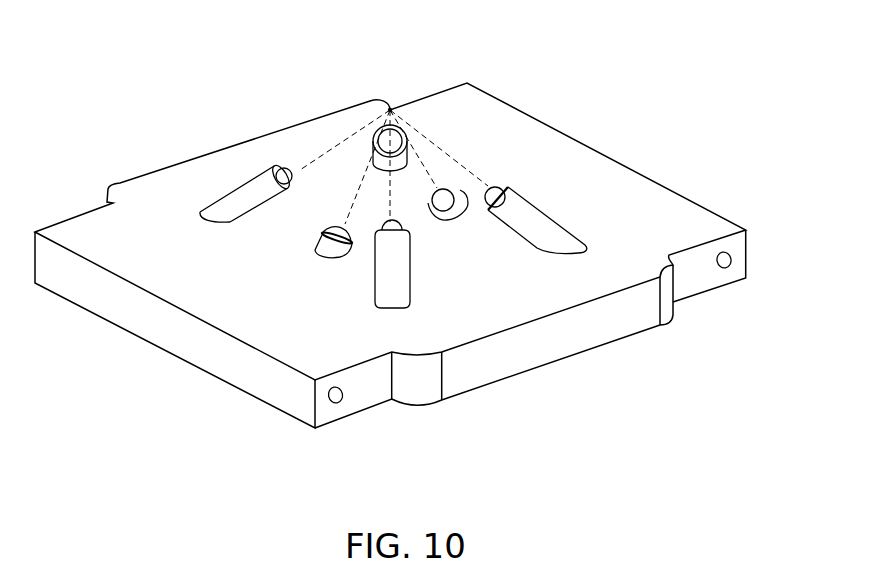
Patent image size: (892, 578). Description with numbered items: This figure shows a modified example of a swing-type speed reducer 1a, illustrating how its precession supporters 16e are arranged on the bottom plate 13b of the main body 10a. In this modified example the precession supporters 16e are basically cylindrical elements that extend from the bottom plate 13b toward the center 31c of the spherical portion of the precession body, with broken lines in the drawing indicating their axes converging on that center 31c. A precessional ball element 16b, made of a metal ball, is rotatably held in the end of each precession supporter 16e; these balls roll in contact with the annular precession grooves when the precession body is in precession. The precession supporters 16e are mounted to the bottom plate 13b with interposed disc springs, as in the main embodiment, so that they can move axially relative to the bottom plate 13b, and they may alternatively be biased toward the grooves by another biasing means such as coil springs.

The swing-type speed reducer 1a is at (617, 57).
The main body 10a is at (439, 298).
The bottom plate 13b is at (700, 293).
The precessional ball element 16b is at (598, 180).
The precession supporter 16e is at (548, 215).
The center of the spherical portion 31c is at (390, 110).